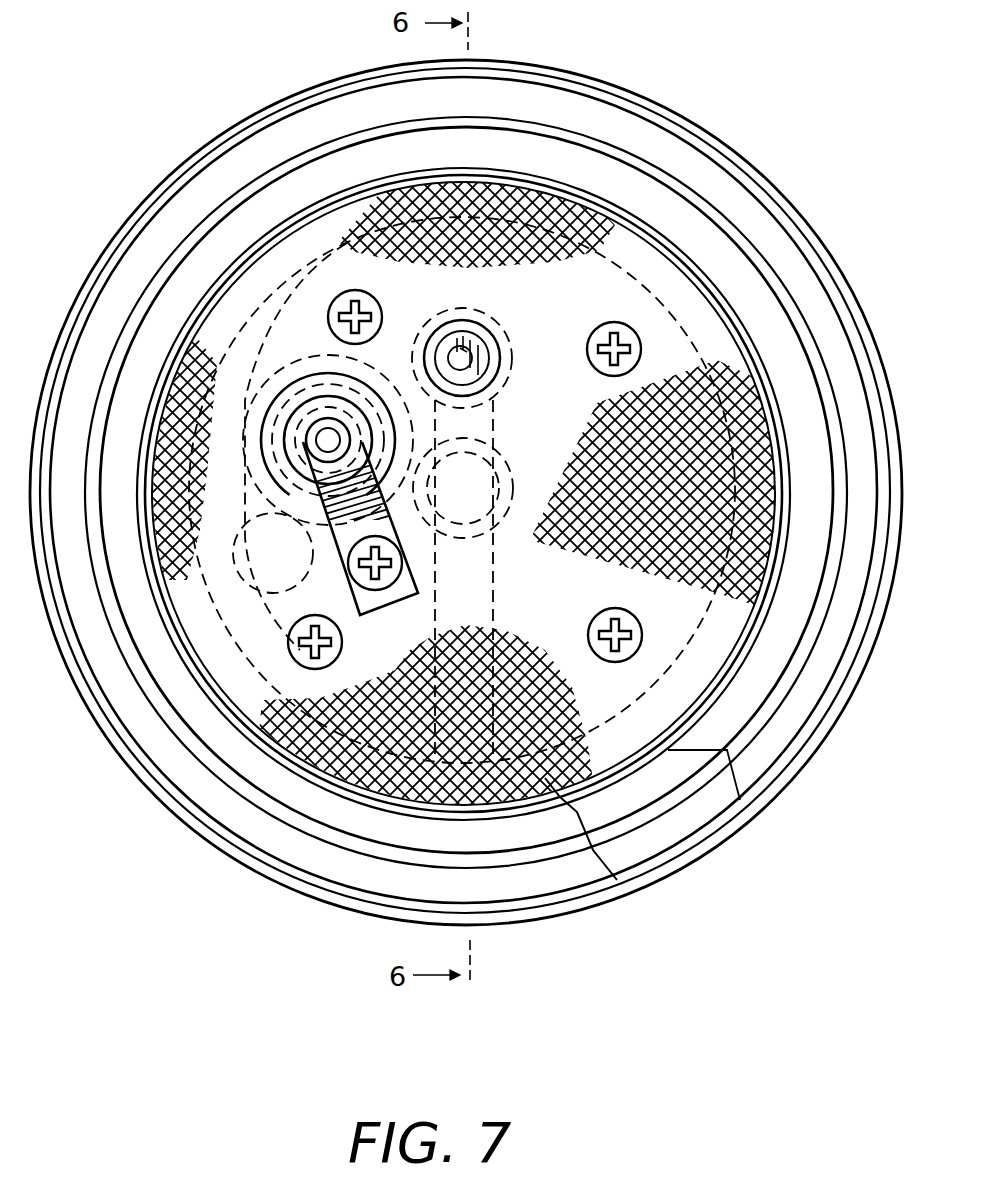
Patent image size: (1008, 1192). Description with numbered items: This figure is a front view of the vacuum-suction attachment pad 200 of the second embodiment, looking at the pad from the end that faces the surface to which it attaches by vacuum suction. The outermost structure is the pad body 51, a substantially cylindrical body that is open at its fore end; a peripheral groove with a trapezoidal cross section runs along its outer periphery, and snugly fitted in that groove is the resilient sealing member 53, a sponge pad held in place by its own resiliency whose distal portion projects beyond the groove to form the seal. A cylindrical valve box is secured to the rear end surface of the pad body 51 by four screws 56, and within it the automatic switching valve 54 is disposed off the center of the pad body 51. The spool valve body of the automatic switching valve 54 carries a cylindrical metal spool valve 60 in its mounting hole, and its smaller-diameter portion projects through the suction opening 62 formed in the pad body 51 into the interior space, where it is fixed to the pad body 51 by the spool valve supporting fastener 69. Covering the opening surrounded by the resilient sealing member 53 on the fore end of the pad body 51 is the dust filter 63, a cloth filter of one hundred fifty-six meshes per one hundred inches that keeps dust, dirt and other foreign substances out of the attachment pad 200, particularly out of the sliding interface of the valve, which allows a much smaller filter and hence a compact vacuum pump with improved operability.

The vacuum-suction attachment pad 200 is at (661, 45).
The pad body 51 is at (742, 165).
The resilient sealing member 53 is at (790, 260).
The automatic switching valve 54 is at (321, 367).
The screws 56 is at (379, 306).
The spool valve 60 is at (326, 438).
The suction opening 62 is at (272, 456).
The dust filter 63 is at (618, 882).
The spool valve supporting fastener 69 is at (370, 610).